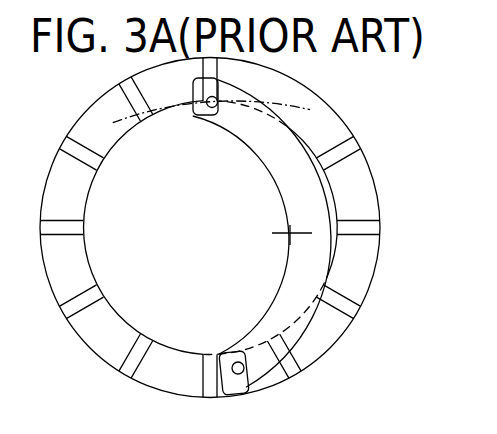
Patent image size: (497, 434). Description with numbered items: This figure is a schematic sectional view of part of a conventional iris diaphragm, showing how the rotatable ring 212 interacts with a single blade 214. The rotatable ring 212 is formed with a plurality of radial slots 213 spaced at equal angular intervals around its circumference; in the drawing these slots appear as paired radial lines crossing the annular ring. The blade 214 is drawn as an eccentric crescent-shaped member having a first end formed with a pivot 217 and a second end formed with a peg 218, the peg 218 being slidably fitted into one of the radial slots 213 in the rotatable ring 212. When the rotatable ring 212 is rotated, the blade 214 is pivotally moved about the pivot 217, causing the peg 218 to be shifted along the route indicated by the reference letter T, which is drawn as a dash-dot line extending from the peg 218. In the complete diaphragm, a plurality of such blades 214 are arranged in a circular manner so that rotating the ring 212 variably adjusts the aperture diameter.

The rotatable ring 212 is at (357, 284).
The radial slots 213 is at (367, 231).
The blade 214 is at (313, 213).
The pivot 217 is at (243, 374).
The peg 218 is at (212, 108).
The route T is at (221, 117).